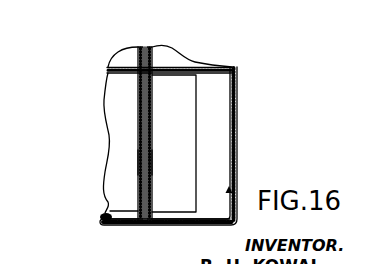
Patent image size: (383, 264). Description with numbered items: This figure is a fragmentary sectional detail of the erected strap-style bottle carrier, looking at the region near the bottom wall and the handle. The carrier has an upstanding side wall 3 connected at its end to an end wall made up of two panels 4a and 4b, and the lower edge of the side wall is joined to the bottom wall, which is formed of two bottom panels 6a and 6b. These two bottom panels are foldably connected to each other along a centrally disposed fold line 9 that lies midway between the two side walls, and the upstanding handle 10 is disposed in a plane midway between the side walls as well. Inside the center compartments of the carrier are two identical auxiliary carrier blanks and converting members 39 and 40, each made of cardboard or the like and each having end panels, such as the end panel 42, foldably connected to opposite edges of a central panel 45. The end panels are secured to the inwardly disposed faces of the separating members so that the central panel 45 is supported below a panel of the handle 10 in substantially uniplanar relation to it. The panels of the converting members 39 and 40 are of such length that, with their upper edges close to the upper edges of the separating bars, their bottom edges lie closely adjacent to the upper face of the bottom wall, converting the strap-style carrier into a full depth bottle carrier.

The side wall 3 is at (237, 173).
The end wall panel 4a is at (108, 66).
The end wall panel 4b is at (190, 62).
The bottom panel 6a is at (113, 227).
The bottom panel 6b is at (172, 226).
The fold line 9 is at (139, 244).
The handle 10 is at (145, 47).
The auxiliary carrier blank and converting member 39 is at (203, 119).
The auxiliary carrier blank and converting member 40 is at (103, 220).
The end panel 42 is at (105, 193).
The central panel 45 is at (138, 160).